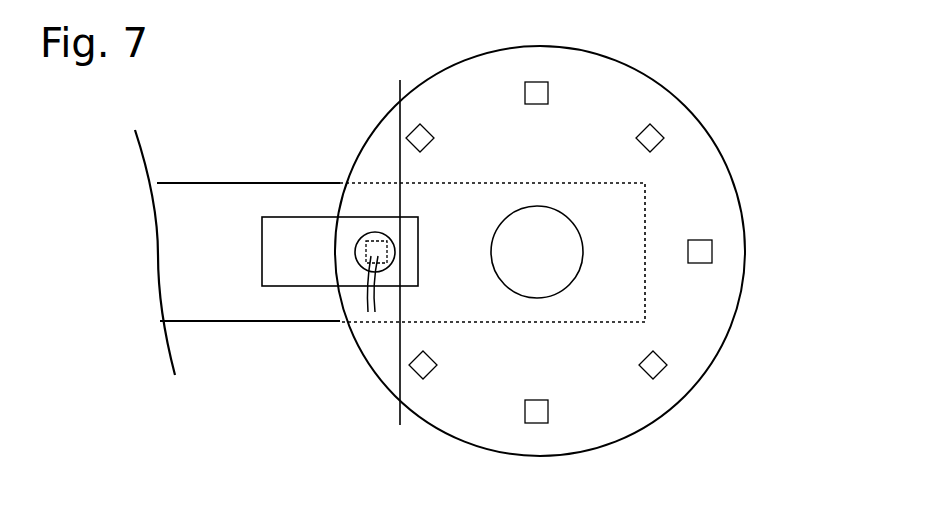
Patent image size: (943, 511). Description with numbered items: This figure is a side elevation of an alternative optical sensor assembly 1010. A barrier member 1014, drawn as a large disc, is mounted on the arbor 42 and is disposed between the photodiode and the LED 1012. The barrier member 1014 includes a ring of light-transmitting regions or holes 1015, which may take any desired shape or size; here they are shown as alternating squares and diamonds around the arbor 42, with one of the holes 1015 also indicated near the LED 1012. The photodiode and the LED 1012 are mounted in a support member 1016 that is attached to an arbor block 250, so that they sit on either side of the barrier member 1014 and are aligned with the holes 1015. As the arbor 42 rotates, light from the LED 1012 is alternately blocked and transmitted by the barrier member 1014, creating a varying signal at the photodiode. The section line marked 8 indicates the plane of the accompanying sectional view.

The barrier member 1014 is at (621, 95).
The light-transmitting regions or holes 1015 is at (393, 237).
The arbor 42 is at (555, 233).
The arbor block 250 is at (230, 193).
The support member 1016 is at (273, 253).
The LED 1012 is at (392, 263).
The optical sensor assembly 1010 is at (290, 374).
The section line 8- 8 is at (400, 80).